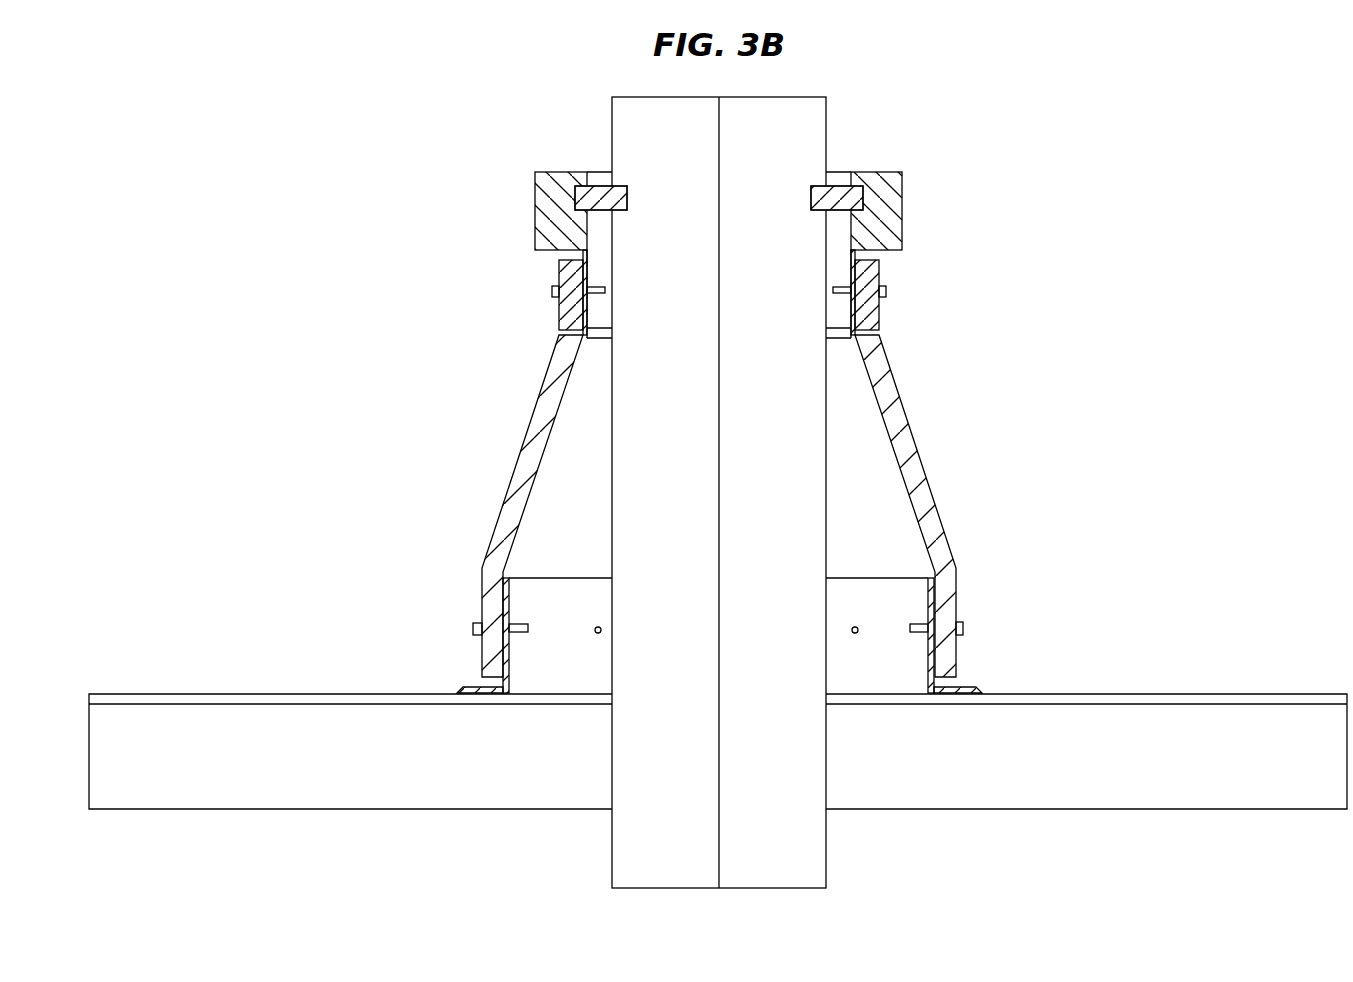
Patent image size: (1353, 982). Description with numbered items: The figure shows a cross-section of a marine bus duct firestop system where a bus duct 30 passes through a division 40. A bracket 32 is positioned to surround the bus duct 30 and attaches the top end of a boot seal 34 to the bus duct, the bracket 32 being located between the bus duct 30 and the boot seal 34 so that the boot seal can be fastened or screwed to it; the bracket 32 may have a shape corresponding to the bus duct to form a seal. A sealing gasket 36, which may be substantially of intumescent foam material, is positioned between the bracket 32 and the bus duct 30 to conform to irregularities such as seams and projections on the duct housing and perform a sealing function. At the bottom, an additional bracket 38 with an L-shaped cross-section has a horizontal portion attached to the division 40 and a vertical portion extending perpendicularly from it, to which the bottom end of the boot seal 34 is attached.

The bus duct 30 is at (812, 120).
The bracket 32 is at (840, 308).
The boot seal 34 is at (872, 450).
The sealing gasket 36 is at (843, 192).
The additional bracket 38 is at (915, 600).
The division 40 is at (1018, 793).